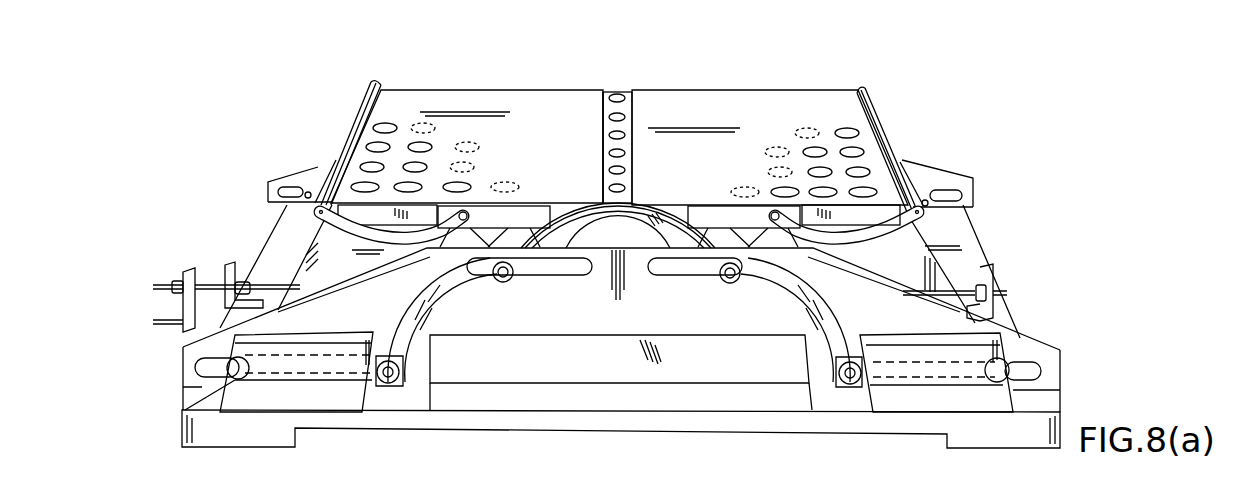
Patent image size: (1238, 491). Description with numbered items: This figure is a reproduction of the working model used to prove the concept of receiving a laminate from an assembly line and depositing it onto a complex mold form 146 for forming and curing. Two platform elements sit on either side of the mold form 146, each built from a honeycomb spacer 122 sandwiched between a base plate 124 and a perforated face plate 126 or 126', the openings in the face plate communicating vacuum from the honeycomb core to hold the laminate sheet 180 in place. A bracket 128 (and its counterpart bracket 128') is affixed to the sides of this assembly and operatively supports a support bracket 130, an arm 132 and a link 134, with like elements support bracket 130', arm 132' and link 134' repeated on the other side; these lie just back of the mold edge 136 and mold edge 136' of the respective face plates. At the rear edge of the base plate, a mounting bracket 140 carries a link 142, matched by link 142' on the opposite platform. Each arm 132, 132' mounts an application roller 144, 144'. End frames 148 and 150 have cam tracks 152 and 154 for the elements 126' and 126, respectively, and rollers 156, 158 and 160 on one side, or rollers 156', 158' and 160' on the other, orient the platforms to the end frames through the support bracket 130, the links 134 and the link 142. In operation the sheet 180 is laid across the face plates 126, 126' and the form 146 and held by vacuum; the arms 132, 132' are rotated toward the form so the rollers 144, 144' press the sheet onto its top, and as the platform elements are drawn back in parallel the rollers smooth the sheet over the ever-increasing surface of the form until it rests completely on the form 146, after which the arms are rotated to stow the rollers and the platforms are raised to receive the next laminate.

The honeycomb spacer 122 is at (963, 220).
The base plate 124 is at (838, 244).
The face plate 126 is at (770, 268).
The face plate 126' is at (467, 268).
The bracket 128 is at (744, 189).
The bracket 128' is at (494, 186).
The support bracket 130 is at (720, 206).
The support bracket 130' is at (509, 202).
The arm 132 is at (900, 220).
The arm 132' is at (337, 210).
The link 134 is at (795, 320).
The link 134' is at (443, 320).
The mold edge 136 is at (639, 124).
The mold edge 136' is at (599, 124).
The mounting bracket 140 is at (892, 238).
The link 142 is at (984, 271).
The link 142' is at (242, 268).
The application roller 144 is at (906, 144).
The application roller 144' is at (347, 125).
The mold form 146 is at (627, 123).
The end frame 148 is at (1035, 340).
The end frame 150 is at (287, 176).
The cam track 152 is at (568, 270).
The cam track 154 is at (663, 270).
The roller 156 is at (728, 291).
The roller 156' is at (521, 290).
The roller 158 is at (924, 398).
The roller 158' is at (311, 401).
The roller 160 is at (1025, 264).
The roller 160' is at (223, 261).
The sheet 180 is at (733, 490).